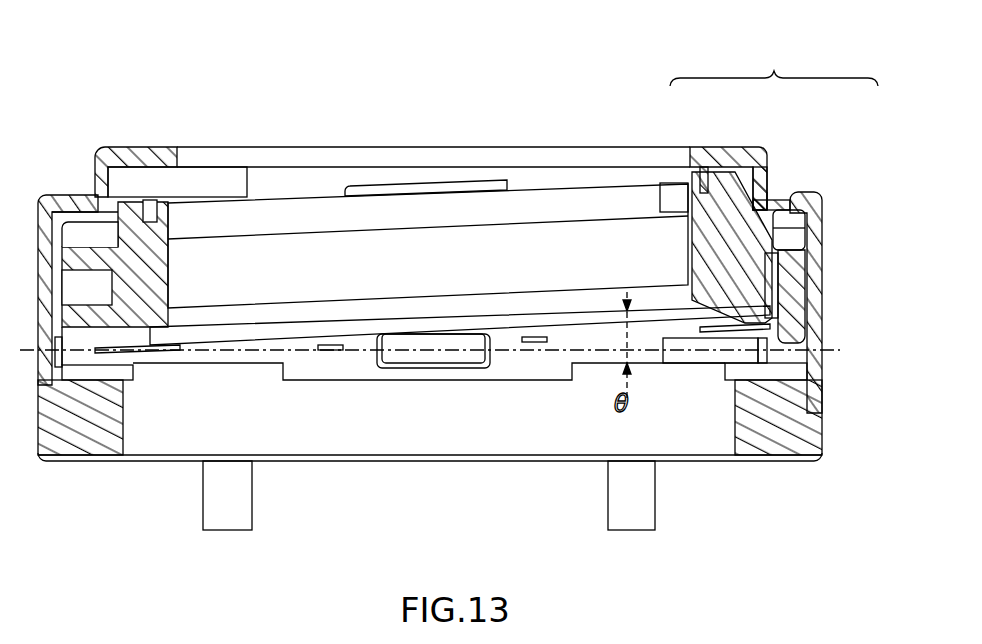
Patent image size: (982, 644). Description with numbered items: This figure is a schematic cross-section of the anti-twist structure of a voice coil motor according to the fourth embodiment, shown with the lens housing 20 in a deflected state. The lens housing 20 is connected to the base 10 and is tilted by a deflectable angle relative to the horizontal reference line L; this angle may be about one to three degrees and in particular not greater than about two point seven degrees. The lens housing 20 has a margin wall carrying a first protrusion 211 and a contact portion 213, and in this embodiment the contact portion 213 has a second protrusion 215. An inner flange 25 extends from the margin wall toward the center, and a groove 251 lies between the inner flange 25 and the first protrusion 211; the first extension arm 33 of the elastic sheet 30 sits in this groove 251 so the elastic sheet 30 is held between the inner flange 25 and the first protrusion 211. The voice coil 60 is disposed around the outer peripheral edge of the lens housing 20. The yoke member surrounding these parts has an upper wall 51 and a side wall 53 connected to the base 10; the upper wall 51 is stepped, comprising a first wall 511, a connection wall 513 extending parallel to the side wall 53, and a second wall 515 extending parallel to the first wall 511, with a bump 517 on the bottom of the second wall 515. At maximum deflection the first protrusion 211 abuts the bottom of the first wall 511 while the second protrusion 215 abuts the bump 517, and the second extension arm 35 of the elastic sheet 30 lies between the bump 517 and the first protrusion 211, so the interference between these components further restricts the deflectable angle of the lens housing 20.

The base 10 is at (770, 420).
The lens housing 20 is at (803, 318).
The inner flange 25 is at (182, 216).
The elastic sheet 30 is at (92, 210).
The first extension arm 33 is at (668, 205).
The second extension arm 35 is at (800, 272).
The upper wall 51 is at (774, 66).
The side wall 53 is at (790, 372).
The voice coil 60 is at (795, 288).
The first protrusion 211 is at (126, 207).
The contact portion 213 is at (790, 214).
The second protrusion 215 is at (795, 232).
The groove 251 is at (152, 200).
The first wall 511 is at (692, 162).
The connection wall 513 is at (748, 172).
The second wall 515 is at (768, 200).
The bump 517 is at (792, 200).
The horizontal reference line L is at (443, 350).